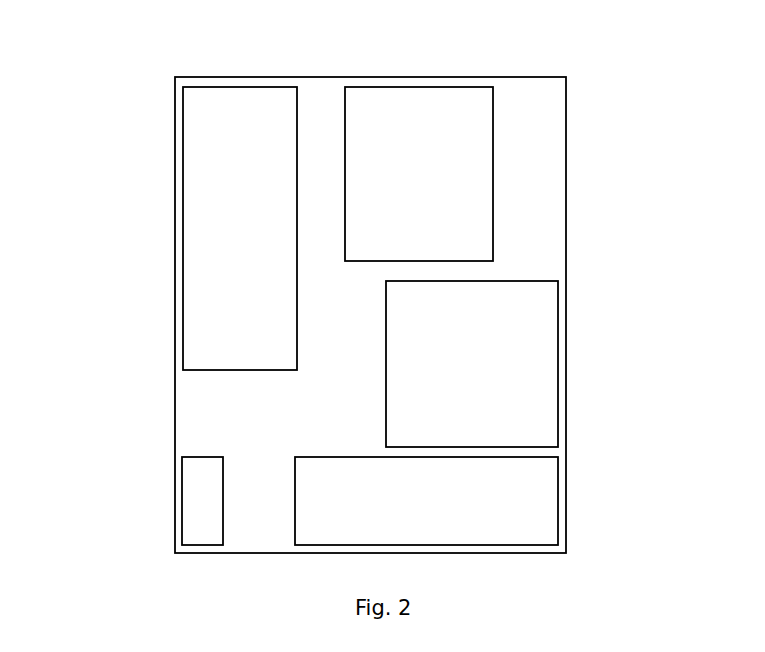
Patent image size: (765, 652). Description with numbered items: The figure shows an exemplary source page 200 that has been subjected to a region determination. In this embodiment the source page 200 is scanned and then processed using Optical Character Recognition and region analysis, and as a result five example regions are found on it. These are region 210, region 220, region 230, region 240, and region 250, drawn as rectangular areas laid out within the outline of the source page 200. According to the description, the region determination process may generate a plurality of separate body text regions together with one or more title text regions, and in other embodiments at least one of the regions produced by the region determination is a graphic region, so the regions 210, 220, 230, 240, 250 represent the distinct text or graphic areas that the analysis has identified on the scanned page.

The source page 200 is at (136, 172).
The region 210 is at (283, 123).
The region 220 is at (373, 301).
The region 230 is at (517, 281).
The region 240 is at (182, 495).
The region 250 is at (550, 457).